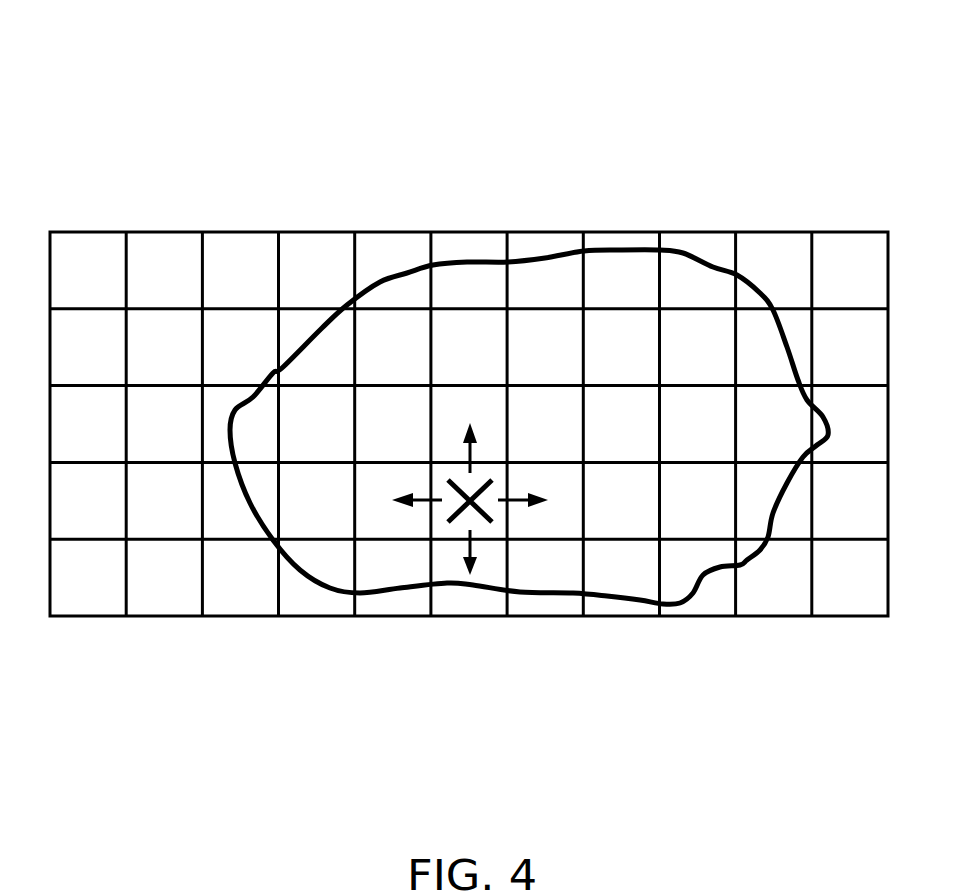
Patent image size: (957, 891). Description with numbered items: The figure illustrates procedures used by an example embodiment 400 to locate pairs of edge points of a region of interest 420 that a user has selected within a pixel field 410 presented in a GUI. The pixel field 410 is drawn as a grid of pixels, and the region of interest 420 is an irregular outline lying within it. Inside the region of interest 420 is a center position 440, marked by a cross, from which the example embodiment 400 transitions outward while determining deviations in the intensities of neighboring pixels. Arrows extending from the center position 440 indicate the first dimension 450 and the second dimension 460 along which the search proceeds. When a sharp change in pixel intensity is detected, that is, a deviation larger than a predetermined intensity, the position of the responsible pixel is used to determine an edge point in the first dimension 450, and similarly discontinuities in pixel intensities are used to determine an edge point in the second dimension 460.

The example embodiment 400 is at (395, 45).
The pixel field 410 is at (253, 617).
The region of interest 420 is at (388, 285).
The center position 440 is at (447, 516).
The first dimension 450 is at (488, 447).
The second dimension 460 is at (517, 512).